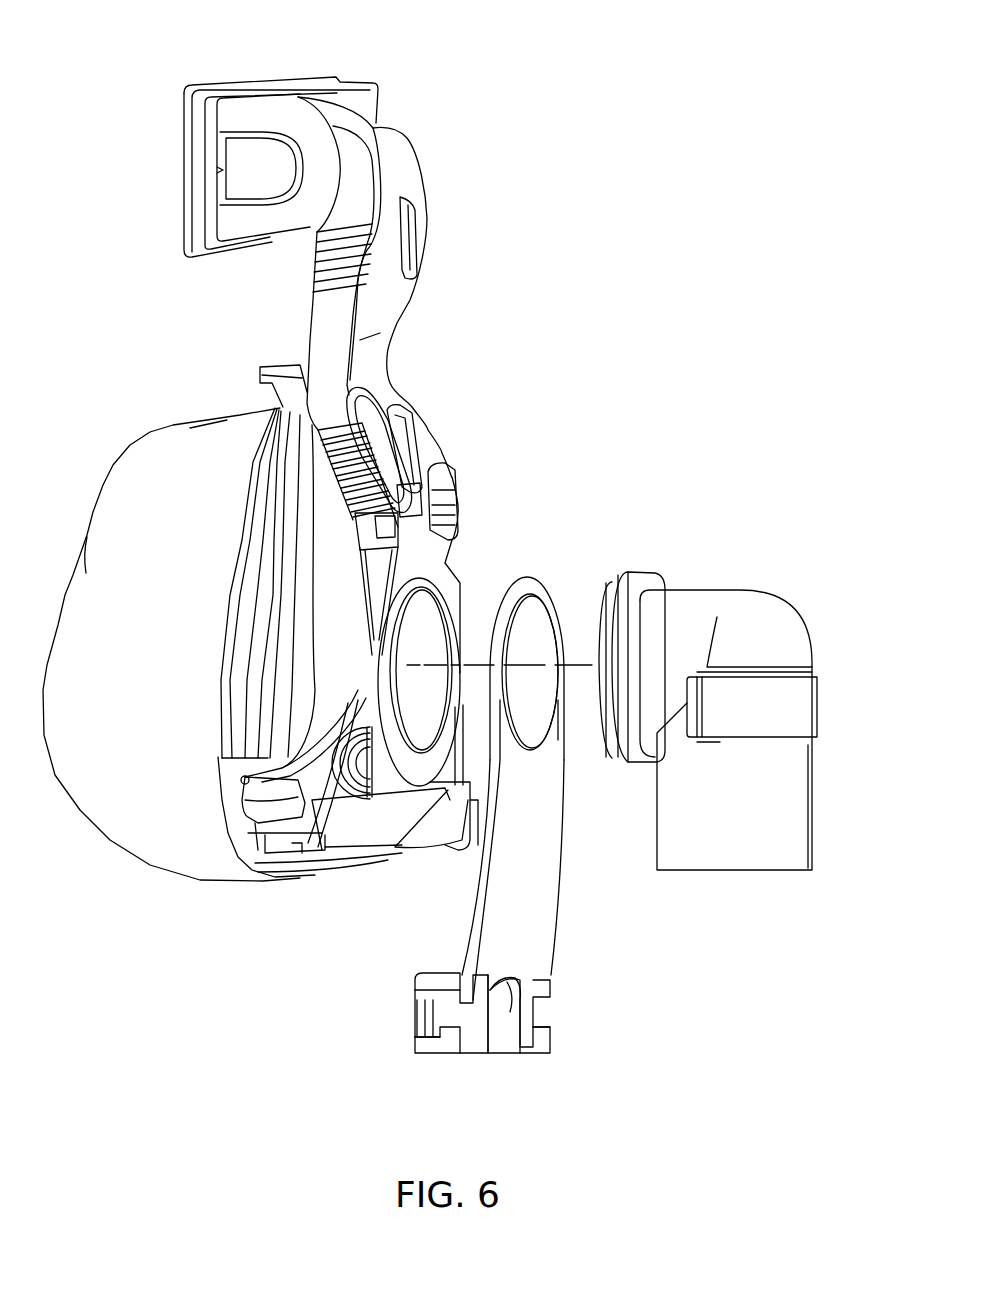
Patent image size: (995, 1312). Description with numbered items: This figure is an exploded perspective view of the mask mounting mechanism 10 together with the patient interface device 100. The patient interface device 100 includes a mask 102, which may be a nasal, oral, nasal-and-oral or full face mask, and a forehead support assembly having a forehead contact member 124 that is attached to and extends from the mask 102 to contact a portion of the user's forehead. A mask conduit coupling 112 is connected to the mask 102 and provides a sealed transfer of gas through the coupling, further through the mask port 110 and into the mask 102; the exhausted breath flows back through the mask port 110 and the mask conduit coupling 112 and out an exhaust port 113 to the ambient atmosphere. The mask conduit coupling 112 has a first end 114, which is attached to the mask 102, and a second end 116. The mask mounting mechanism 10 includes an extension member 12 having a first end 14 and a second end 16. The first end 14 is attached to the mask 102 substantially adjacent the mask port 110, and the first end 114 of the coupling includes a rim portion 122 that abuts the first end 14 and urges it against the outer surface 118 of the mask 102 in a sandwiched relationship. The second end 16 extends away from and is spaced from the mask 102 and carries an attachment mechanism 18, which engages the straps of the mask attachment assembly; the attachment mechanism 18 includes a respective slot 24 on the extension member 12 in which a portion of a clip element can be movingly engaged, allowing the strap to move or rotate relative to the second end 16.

The mask mounting mechanism 10 is at (451, 753).
The extension member 12 is at (545, 912).
The first end 14 is at (542, 565).
The second end 16 is at (473, 1057).
The attachment mechanism 18 is at (470, 1068).
The slot 24 is at (445, 1025).
The patient interface device 100 is at (399, 339).
The mask 102 is at (150, 838).
The mask port 110 is at (420, 628).
The mask conduit coupling 112 is at (729, 713).
The exhaust port 113 is at (822, 710).
The first end 114 is at (708, 578).
The second end 116 is at (815, 860).
The outer surface 118 is at (433, 572).
The rim portion 122 is at (645, 572).
The forehead contact member 124 is at (258, 62).